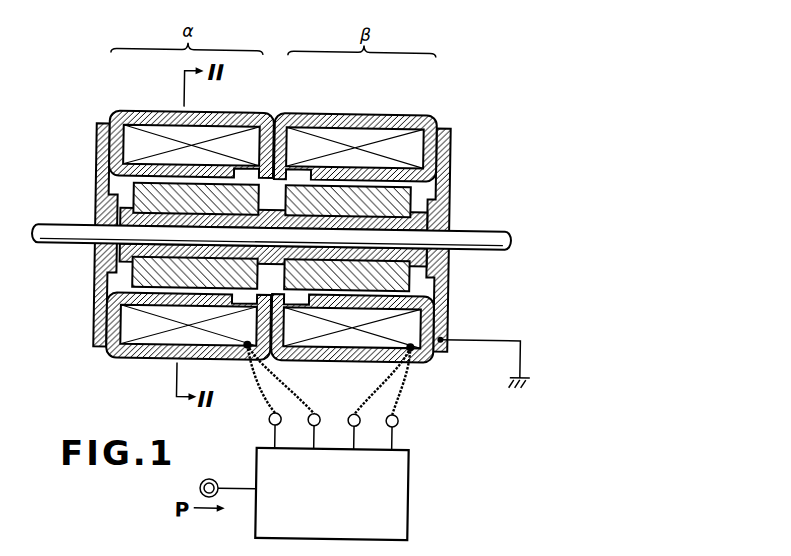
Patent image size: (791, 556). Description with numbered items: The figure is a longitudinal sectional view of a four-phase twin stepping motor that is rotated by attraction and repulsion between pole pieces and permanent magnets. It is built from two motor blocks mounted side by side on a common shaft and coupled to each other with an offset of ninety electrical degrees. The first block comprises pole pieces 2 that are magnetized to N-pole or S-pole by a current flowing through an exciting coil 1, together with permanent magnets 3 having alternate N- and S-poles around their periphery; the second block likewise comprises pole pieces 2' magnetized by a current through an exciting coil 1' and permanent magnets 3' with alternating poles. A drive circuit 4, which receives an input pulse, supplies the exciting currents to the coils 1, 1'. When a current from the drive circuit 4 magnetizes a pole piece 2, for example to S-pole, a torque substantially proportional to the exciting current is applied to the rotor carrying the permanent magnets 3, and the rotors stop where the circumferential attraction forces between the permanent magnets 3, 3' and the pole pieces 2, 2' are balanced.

The exciting coil 1 is at (189, 261).
The exciting coil 1' is at (355, 210).
The pole pieces 2 is at (168, 235).
The pole pieces 2' is at (379, 238).
The permanent magnets 3 is at (161, 230).
The permanent magnets 3' is at (385, 237).
The drive circuit 4 is at (412, 496).